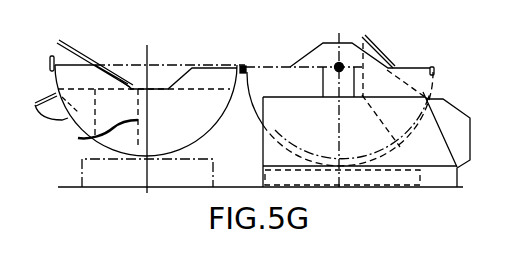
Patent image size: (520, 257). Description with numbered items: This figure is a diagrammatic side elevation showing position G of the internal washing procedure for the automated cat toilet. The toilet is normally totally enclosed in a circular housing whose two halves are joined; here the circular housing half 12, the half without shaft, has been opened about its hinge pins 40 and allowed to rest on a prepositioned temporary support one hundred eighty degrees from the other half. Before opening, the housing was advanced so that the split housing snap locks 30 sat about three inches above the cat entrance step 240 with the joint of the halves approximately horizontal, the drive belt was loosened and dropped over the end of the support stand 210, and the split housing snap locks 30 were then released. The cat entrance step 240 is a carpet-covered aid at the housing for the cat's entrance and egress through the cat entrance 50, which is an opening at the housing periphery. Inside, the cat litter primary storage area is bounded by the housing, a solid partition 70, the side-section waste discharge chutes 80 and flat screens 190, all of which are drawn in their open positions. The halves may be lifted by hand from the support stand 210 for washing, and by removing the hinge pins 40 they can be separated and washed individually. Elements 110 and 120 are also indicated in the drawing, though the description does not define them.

The circular housing half 12 is at (289, 168).
The split housing snap locks 30 is at (50, 57).
The hinge pins 40 is at (242, 66).
The cat entrance 50 is at (384, 149).
The solid partition 70 is at (76, 56).
The waste discharge chutes 80 is at (383, 56).
The latch projection 110 is at (66, 121).
The cam surface 120 is at (87, 137).
The flat screens 190 is at (222, 68).
The support stand 210 is at (283, 90).
The cat entrance step 240 is at (468, 166).